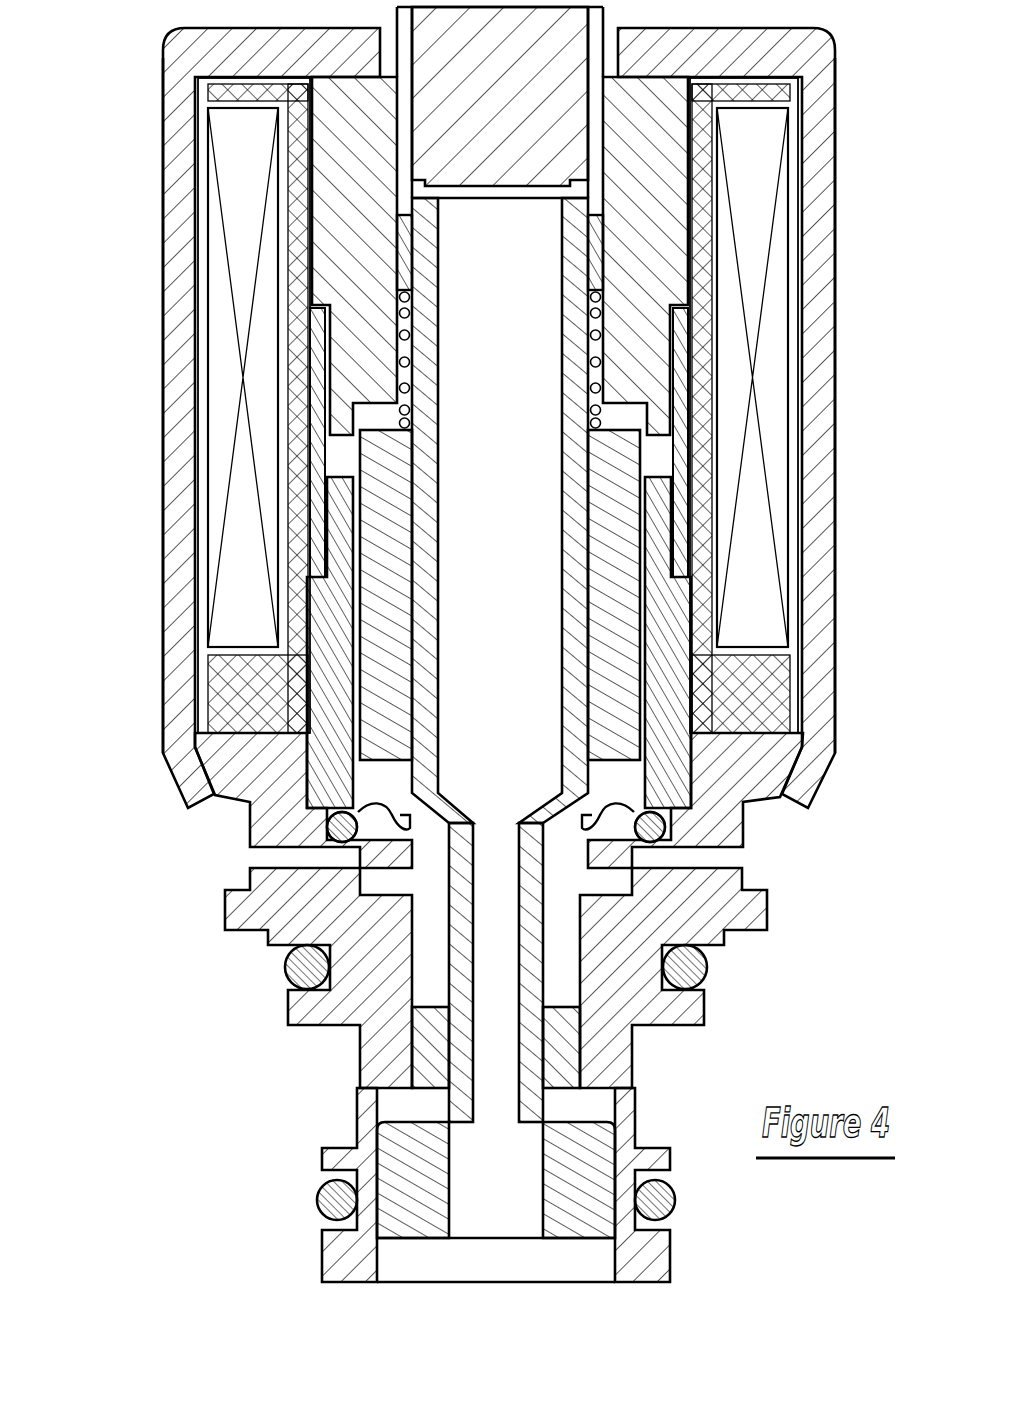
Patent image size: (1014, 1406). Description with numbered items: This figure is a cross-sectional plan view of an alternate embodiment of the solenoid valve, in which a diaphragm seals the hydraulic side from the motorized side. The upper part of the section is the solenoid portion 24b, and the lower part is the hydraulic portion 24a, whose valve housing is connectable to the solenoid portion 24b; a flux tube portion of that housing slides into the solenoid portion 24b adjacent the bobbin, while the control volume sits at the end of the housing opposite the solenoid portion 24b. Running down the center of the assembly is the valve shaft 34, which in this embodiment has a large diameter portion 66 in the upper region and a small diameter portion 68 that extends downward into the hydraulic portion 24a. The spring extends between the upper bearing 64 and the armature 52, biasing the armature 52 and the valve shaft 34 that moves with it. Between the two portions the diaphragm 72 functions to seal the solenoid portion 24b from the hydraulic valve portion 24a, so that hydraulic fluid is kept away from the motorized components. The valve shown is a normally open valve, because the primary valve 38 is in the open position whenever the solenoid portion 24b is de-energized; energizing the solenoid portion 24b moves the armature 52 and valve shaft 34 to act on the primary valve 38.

The primary valve 38 is at (440, 183).
The upper bearing 64 is at (595, 245).
The armature 52 is at (613, 523).
The valve shaft 34 is at (567, 738).
The large diameter portion 66 is at (567, 787).
The small diameter portion 68 is at (533, 948).
The diaphragm 72 is at (610, 833).
The hydraulic portion 24a is at (77, 872).
The solenoid portion 24b is at (79, 12).